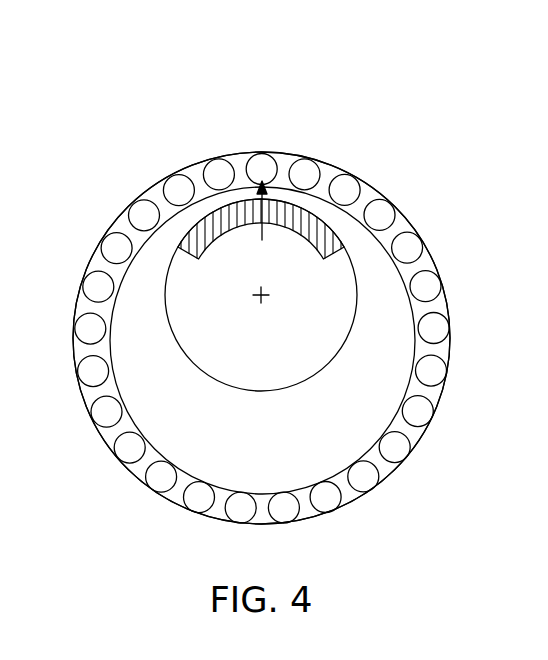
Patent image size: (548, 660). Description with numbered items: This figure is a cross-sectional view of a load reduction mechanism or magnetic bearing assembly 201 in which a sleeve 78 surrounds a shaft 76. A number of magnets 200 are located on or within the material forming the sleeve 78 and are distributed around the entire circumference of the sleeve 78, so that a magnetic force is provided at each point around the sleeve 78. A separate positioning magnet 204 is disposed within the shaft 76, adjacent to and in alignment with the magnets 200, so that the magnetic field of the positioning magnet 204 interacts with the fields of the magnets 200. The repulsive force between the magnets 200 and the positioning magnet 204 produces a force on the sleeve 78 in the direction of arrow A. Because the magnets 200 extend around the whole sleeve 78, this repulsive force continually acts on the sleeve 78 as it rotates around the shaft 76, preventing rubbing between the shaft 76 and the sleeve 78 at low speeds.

The load reduction mechanism/magnetic bearing assembly 201 is at (386, 97).
The sleeve 78 is at (193, 163).
The magnets 200 is at (342, 185).
The shaft 76 is at (165, 302).
The positioning magnet 204 is at (338, 228).
The arrow A is at (240, 168).